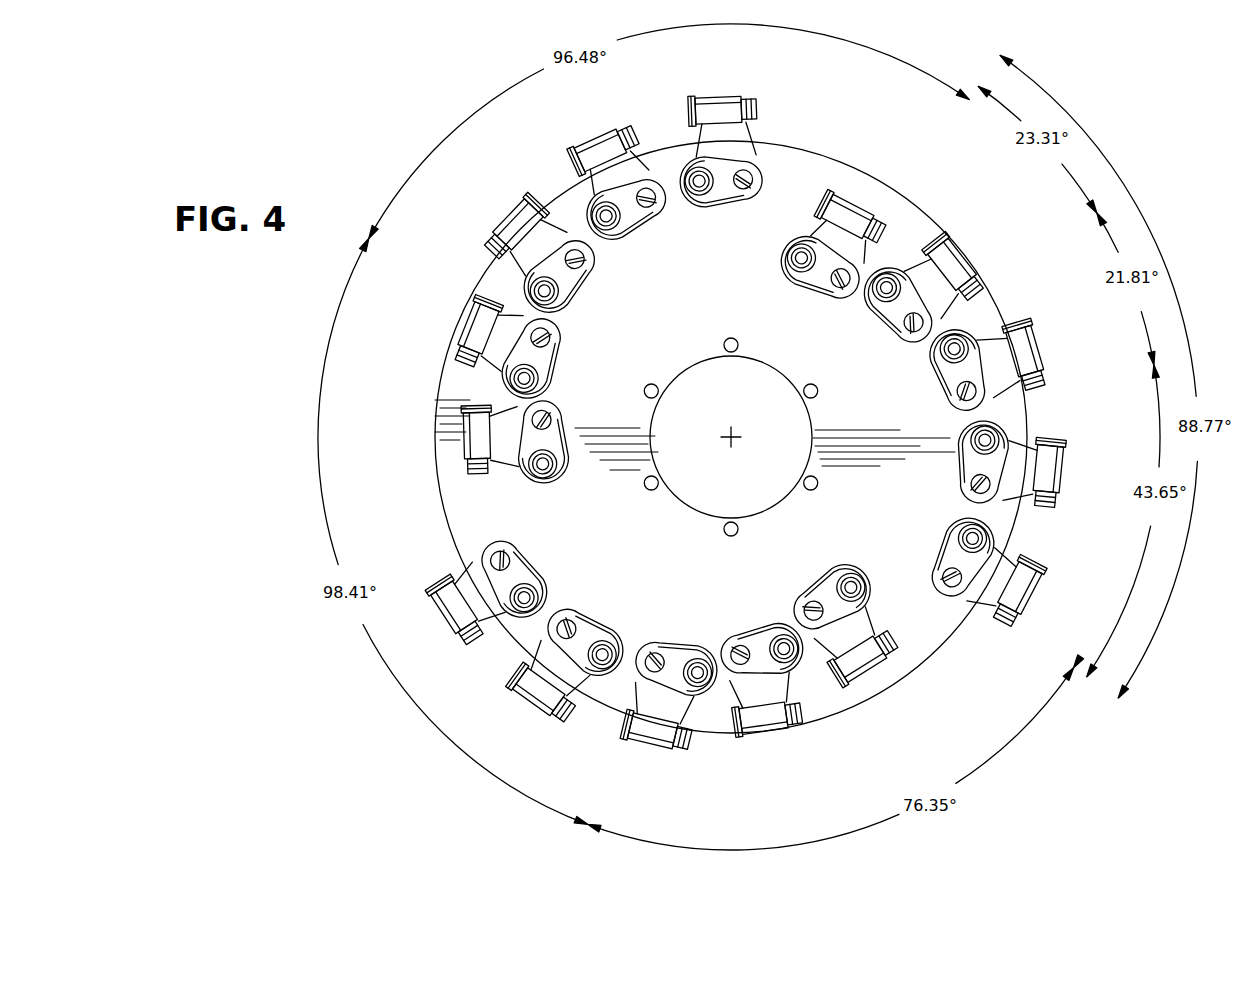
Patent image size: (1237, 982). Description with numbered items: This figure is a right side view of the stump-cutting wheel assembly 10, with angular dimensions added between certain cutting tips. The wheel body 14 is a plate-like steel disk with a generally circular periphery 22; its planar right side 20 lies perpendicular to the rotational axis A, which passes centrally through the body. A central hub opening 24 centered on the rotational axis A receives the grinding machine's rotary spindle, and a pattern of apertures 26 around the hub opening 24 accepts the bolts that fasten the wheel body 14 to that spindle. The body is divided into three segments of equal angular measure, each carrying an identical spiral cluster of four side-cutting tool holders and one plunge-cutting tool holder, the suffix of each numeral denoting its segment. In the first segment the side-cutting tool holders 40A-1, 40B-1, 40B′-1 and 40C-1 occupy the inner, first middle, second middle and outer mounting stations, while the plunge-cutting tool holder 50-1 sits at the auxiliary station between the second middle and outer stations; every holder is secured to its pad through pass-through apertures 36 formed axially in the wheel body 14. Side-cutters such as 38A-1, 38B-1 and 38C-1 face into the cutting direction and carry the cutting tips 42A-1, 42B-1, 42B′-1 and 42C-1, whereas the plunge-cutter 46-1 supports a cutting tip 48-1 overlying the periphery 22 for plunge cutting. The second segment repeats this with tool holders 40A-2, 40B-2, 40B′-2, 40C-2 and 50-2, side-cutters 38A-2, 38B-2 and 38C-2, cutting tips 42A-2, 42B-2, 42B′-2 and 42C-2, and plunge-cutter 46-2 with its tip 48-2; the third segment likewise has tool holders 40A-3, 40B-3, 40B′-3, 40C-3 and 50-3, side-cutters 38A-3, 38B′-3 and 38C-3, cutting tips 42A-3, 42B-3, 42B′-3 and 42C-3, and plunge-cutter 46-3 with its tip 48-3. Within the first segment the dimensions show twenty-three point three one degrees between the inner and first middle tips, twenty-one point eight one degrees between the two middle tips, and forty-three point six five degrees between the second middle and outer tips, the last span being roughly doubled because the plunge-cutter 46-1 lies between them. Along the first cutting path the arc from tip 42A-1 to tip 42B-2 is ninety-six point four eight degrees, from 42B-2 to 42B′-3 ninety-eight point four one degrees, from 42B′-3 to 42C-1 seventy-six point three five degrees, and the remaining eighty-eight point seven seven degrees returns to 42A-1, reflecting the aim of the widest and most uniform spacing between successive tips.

The wheel assembly 10 is at (387, 130).
The wheel body 14 is at (872, 512).
The right side 20 is at (594, 420).
The periphery 22 is at (436, 494).
The central hub opening 24 is at (692, 508).
The apertures 26 is at (730, 337).
The apertures 36 is at (583, 268).
The rotational axis A is at (727, 433).
The side-cutting tool holder 40A-1 is at (859, 220).
The side-cutting tool holder 40B-1 is at (972, 308).
The side-cutting tool holder 40B′-1 is at (1016, 377).
The side-cutting tool holder 40C-1 is at (1022, 604).
The plunge-cutting tool holder 50-1 is at (1049, 467).
The side-cutter 38A-1 is at (915, 188).
The inner cutting tip 42A-1 is at (888, 222).
The side-cutter 38B-1 is at (1006, 271).
The first middle cutting tip 42B-1 is at (1010, 322).
The second middle cutting tip 42B′-1 is at (1048, 395).
The plunge-cutter 46-1 is at (1088, 486).
The cutting tip 48-1 is at (1045, 505).
The side-cutter 38C-1 is at (1047, 626).
The outer cutting tip 42C-1 is at (1015, 635).
The side-cutting tool holder 40A-2 is at (464, 461).
The side-cutting tool holder 40B-2 is at (466, 316).
The side-cutting tool holder 40B′-2 is at (582, 232).
The side-cutting tool holder 40C-2 is at (771, 123).
The plunge-cutting tool holder 50-2 is at (597, 149).
The side-cutter 38A-2 is at (416, 436).
The inner cutting tip 42A-2 is at (462, 415).
The side-cutter 38B-2 is at (442, 297).
The first middle cutting tip 42B-2 is at (500, 300).
The second middle cutting tip 42B′-2 is at (520, 212).
The plunge-cutter 46-2 is at (613, 113).
The cutting tip 48-2 is at (630, 135).
The side-cutter 38C-2 is at (764, 82).
The outer cutting tip 42C-2 is at (755, 106).
The side-cutting tool holder 40A-3 is at (877, 669).
The side-cutting tool holder 40B-3 is at (780, 722).
The side-cutting tool holder 40B′-3 is at (678, 705).
The side-cutting tool holder 40C-3 is at (428, 585).
The plunge-cutting tool holder 50-3 is at (502, 705).
The side-cutter 38A-3 is at (898, 705).
The inner cutting tip 42A-3 is at (885, 700).
The first middle cutting tip 42B-3 is at (775, 735).
The side-cutter 38B′-3 is at (652, 705).
The second middle cutting tip 42B′-3 is at (646, 716).
The plunge-cutter 46-3 is at (474, 738).
The cutting tip 48-3 is at (520, 685).
The side-cutter 38C-3 is at (393, 623).
The outer cutting tip 42C-3 is at (435, 592).